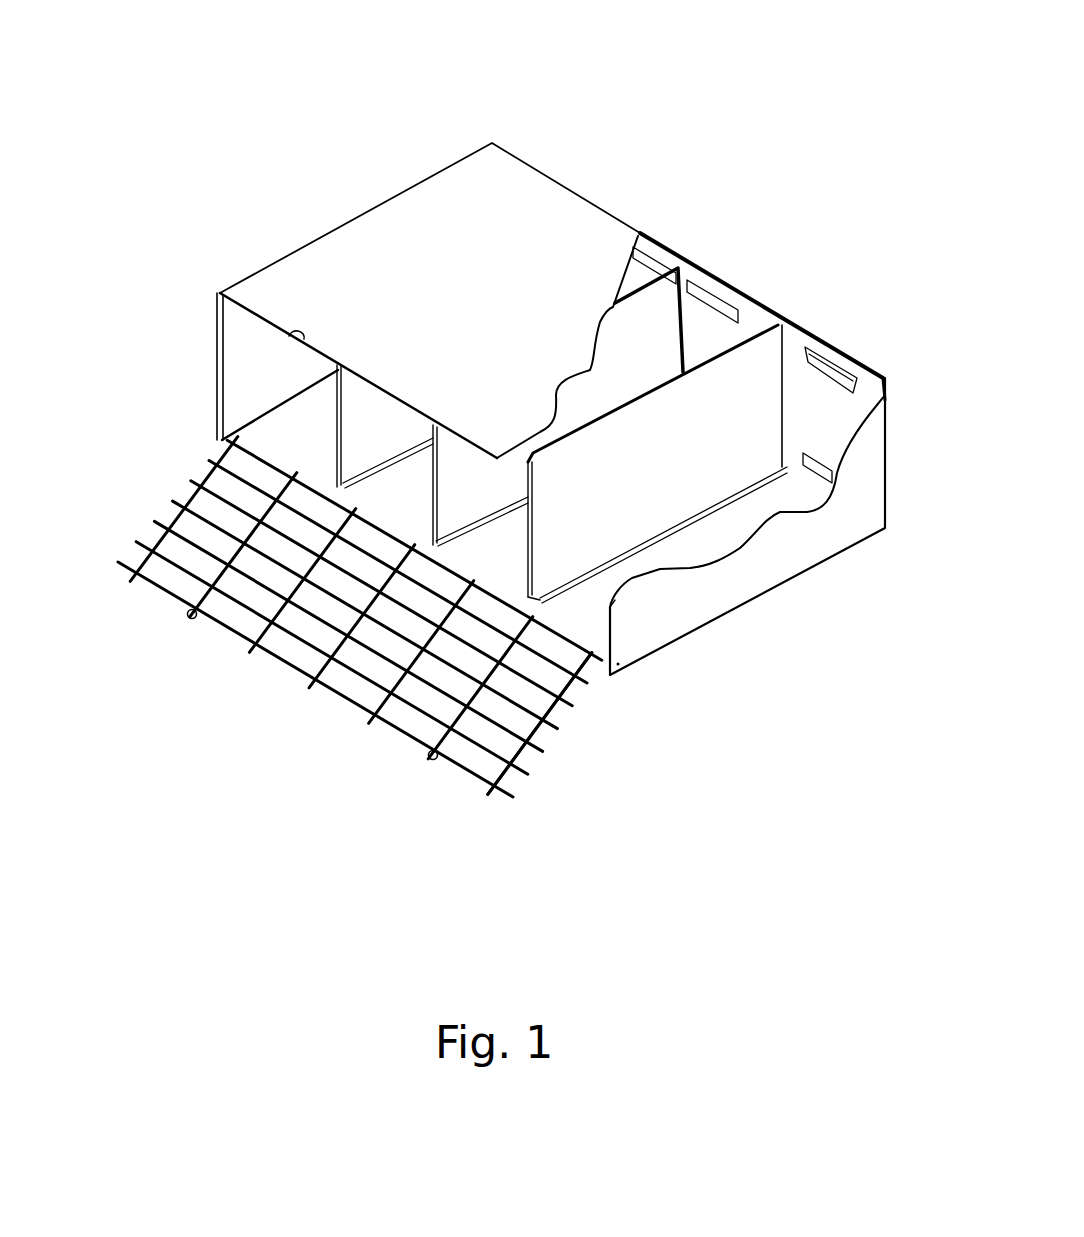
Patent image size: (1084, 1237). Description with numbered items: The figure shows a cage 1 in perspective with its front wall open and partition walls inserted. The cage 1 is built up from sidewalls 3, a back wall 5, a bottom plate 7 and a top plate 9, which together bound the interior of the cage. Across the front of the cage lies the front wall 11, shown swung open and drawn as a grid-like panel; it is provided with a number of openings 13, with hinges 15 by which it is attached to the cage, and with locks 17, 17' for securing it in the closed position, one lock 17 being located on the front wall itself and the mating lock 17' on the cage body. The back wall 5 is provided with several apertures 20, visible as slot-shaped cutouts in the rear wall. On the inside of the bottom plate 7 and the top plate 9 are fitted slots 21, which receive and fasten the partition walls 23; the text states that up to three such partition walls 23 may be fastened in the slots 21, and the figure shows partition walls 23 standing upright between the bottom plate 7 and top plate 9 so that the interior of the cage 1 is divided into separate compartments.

The cage 1 is at (265, 100).
The sidewalls 3 is at (252, 372).
The back wall 5 is at (877, 351).
The bottom plate 7 is at (597, 603).
The top plate 9 is at (320, 280).
The front wall 11 is at (355, 737).
The openings 13 is at (447, 762).
The hinges 15 is at (575, 667).
The lock 17 is at (284, 685).
The lock 17' is at (234, 279).
The apertures 20 is at (807, 347).
The slots 21 is at (637, 540).
The partition walls 23 is at (717, 397).